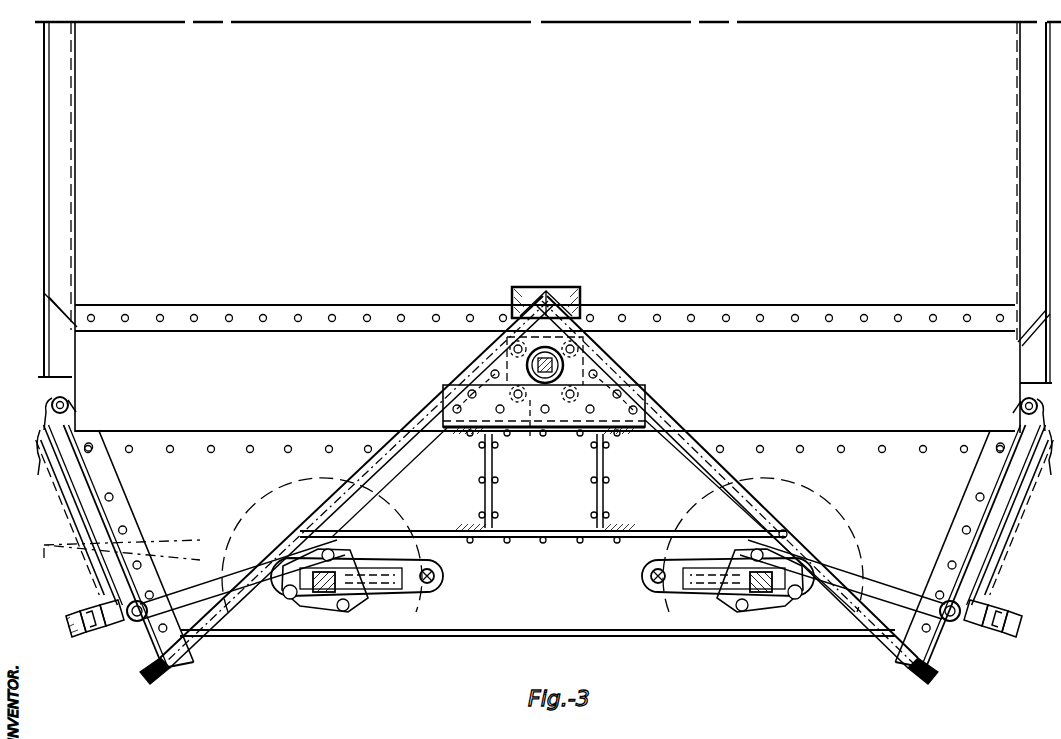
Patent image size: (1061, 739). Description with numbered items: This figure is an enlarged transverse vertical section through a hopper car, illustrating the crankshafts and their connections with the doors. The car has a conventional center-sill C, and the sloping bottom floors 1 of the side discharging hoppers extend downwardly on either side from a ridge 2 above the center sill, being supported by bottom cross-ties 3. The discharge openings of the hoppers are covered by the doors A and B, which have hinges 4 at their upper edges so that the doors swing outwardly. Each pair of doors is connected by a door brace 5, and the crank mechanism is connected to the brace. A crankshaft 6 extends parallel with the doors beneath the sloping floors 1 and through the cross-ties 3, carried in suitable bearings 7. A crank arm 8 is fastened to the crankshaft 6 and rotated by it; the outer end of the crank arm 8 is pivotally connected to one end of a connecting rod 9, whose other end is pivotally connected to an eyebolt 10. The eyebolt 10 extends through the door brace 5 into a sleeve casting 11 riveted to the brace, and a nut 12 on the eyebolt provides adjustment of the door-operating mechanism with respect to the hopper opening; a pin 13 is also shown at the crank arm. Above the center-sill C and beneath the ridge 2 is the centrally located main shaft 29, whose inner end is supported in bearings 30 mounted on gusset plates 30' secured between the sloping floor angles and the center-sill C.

The sloping bottom floors 1 is at (486, 350).
The ridge 2 is at (549, 311).
The bottom cross-ties 3 is at (585, 637).
The hinges 4 is at (46, 410).
The door braces 5 is at (78, 631).
The crankshafts 6 is at (341, 594).
The bearings 7 is at (349, 606).
The crank arm 8 is at (381, 589).
The connecting rod 9 is at (263, 584).
The eyebolt 10 is at (133, 625).
The sleeve casting 11 is at (113, 630).
The nut 12 is at (96, 635).
The lever shaft pin 13 is at (433, 590).
The main shaft 29 is at (585, 362).
The bearings 30 is at (544, 398).
The gusset plates 30' is at (569, 389).
The side discharge door A is at (68, 523).
The side discharge door B is at (1003, 572).
The center-sill C is at (485, 464).